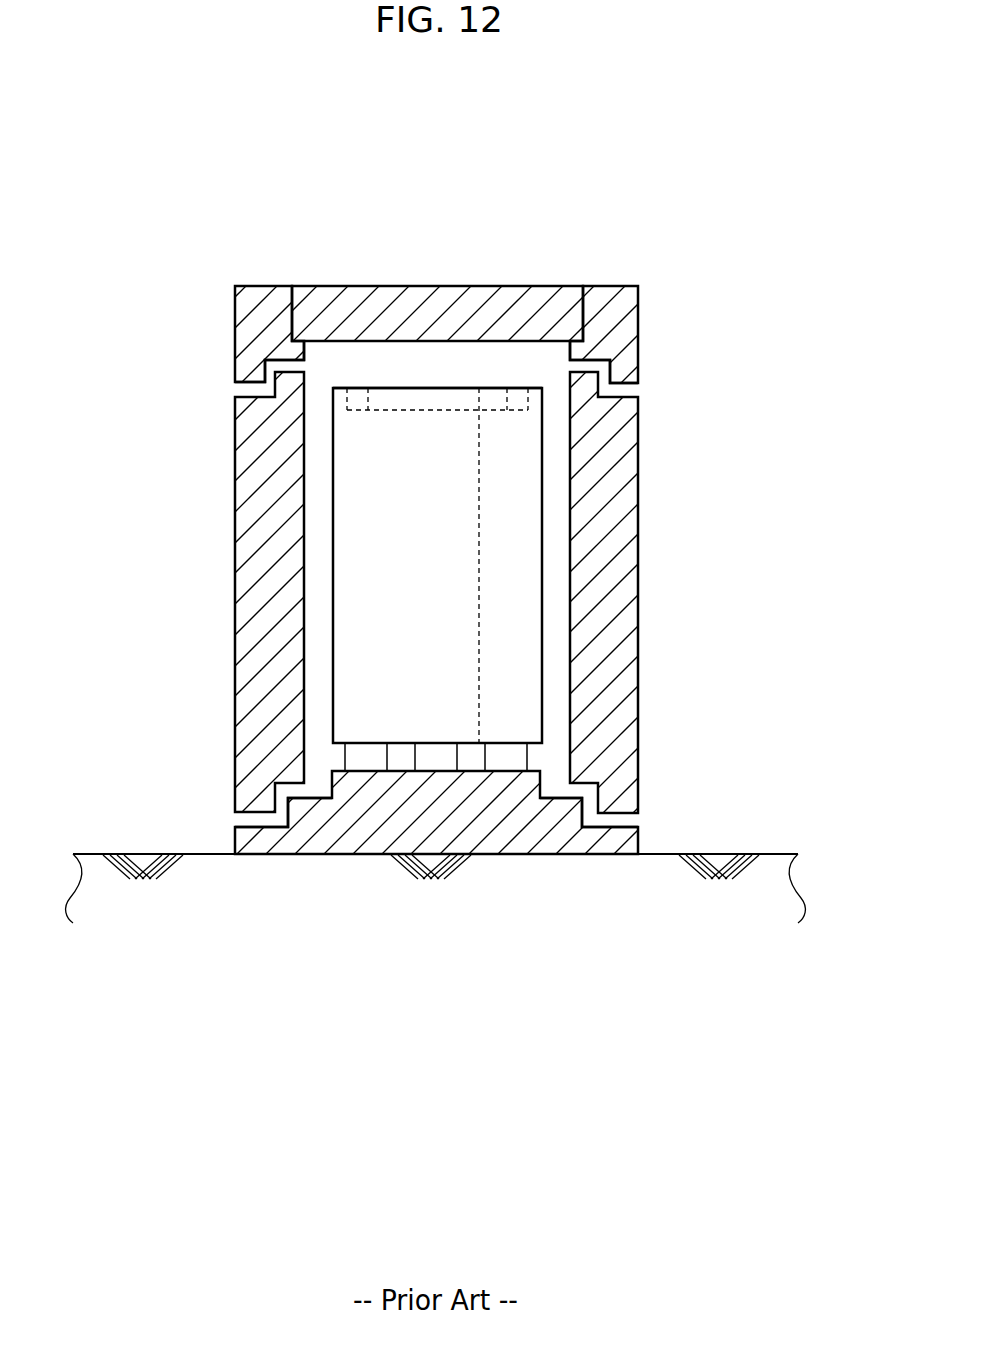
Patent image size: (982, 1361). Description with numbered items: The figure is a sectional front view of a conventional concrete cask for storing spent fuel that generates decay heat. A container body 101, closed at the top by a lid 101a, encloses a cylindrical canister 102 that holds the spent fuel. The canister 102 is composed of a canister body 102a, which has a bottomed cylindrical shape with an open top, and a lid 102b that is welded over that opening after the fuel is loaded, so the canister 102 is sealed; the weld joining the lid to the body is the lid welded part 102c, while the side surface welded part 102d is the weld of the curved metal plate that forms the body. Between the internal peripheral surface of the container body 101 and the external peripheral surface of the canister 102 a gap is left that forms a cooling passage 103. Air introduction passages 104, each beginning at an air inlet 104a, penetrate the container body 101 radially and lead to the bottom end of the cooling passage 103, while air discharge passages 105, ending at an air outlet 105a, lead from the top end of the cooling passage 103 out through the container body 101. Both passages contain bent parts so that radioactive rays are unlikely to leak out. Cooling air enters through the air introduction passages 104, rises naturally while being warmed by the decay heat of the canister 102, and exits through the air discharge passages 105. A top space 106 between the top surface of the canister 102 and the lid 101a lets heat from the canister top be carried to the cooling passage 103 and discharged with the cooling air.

The container body 101 is at (228, 668).
The lid 101a is at (423, 293).
The canister 102 is at (568, 565).
The canister body 102a is at (552, 504).
The lid 102b is at (458, 397).
The lid welded part 102c is at (383, 388).
The side surface welded part 102d is at (479, 618).
The cooling passage 103 is at (553, 551).
The air introduction passages 104 is at (283, 815).
The air inlet 104a is at (232, 820).
The air discharge passages 105 is at (268, 370).
The air outlet 105a is at (627, 347).
The top space 106 is at (410, 368).